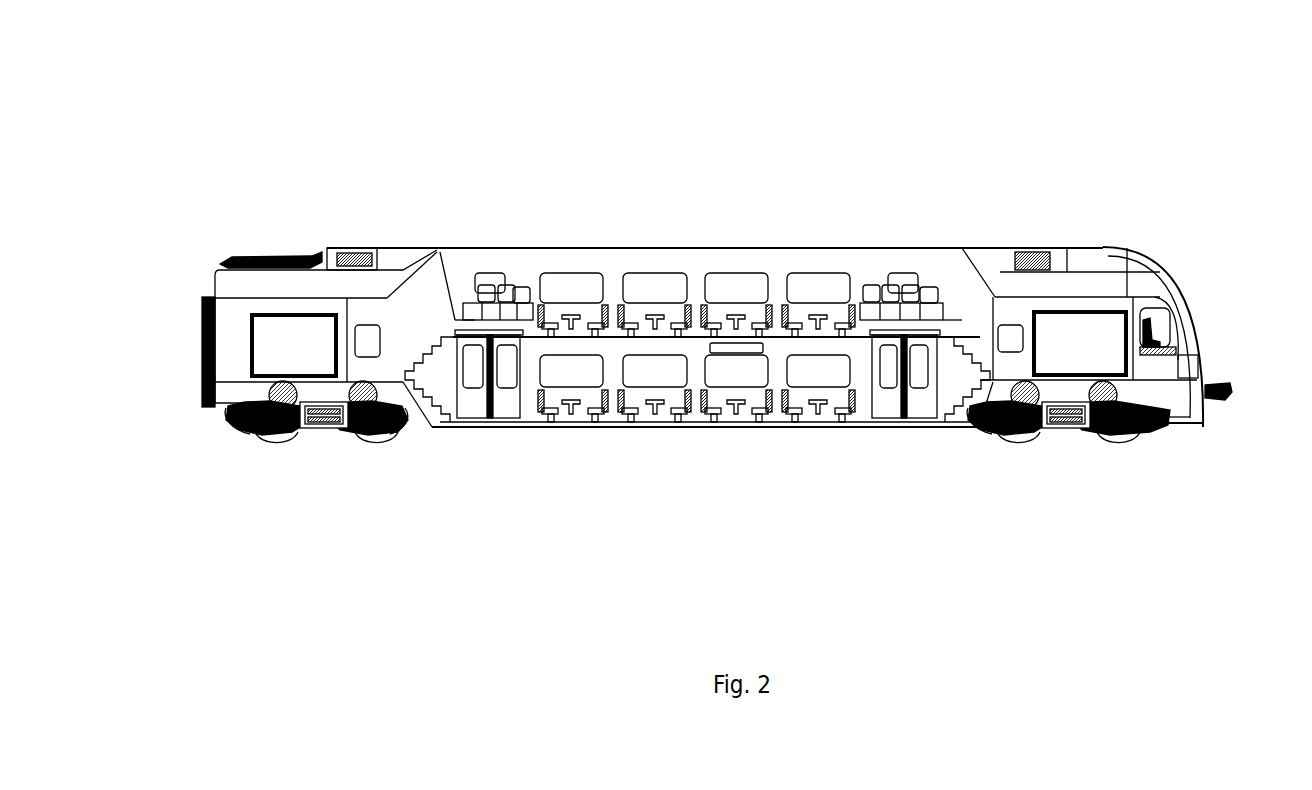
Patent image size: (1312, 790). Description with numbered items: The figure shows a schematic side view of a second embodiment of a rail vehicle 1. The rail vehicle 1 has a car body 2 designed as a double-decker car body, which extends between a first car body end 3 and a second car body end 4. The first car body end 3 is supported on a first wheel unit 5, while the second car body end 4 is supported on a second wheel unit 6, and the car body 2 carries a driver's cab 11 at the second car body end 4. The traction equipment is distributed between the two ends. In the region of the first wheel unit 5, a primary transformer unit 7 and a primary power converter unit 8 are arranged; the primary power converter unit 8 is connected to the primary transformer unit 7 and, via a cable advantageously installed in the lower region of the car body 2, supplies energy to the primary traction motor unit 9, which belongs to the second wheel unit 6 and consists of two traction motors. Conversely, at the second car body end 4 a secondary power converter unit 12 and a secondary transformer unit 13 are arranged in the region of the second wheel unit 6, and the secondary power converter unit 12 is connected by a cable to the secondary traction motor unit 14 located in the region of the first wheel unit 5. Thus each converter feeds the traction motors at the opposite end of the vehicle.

The rail vehicle 1 is at (428, 150).
The car body 2 is at (680, 253).
The first car body end 3 is at (257, 277).
The second car body end 4 is at (1182, 292).
The first wheel unit 5 is at (323, 428).
The second wheel unit 6 is at (1067, 428).
The primary transformer unit 7 is at (294, 345).
The primary power converter unit 8 is at (1080, 343).
The primary traction motor unit 9 is at (995, 430).
The driver's cab 11 is at (1160, 337).
The secondary power converter unit 12 is at (294, 345).
The secondary transformer unit 13 is at (1080, 343).
The secondary traction motor unit 14 is at (250, 432).